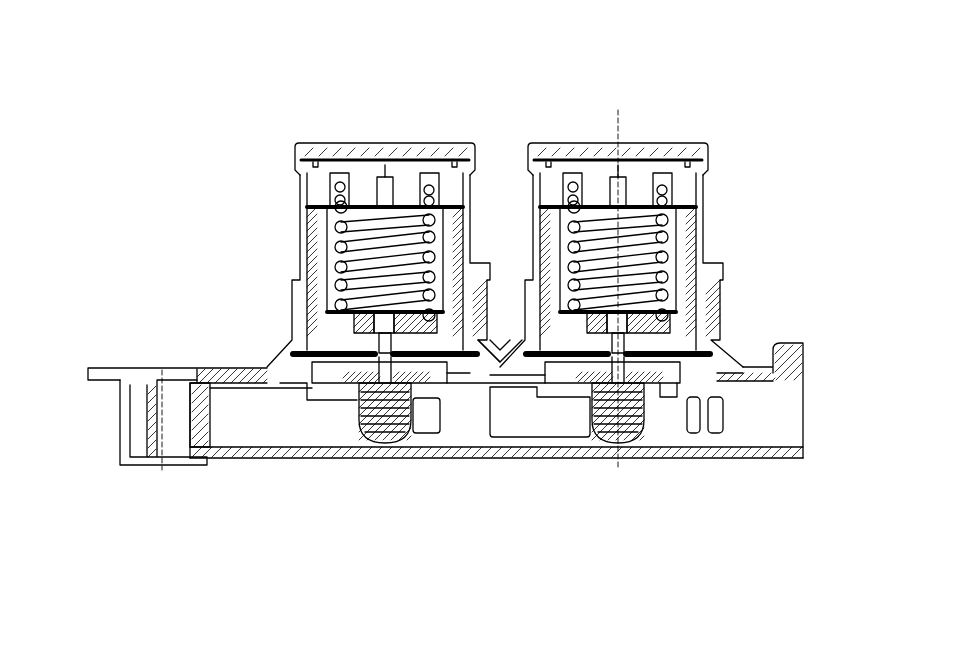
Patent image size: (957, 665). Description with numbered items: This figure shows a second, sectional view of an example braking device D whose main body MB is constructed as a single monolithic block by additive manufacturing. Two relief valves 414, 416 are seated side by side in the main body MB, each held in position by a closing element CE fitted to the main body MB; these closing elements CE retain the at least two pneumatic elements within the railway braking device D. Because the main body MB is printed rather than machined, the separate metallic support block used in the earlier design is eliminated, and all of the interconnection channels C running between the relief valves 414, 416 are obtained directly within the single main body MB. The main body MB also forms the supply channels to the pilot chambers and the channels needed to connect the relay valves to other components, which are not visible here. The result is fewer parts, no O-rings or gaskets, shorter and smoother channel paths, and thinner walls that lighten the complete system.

The closing elements CE is at (343, 150).
The railway braking device D is at (735, 143).
The relief valve 414 is at (300, 253).
The relief valve 416 is at (702, 240).
The main body MB is at (130, 428).
The interconnection channels C is at (510, 456).